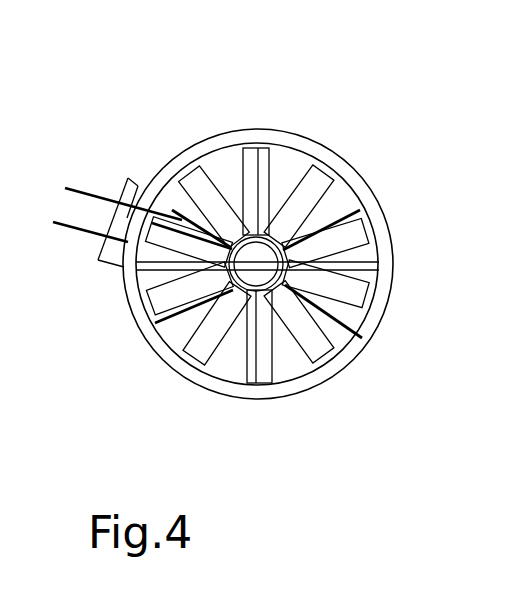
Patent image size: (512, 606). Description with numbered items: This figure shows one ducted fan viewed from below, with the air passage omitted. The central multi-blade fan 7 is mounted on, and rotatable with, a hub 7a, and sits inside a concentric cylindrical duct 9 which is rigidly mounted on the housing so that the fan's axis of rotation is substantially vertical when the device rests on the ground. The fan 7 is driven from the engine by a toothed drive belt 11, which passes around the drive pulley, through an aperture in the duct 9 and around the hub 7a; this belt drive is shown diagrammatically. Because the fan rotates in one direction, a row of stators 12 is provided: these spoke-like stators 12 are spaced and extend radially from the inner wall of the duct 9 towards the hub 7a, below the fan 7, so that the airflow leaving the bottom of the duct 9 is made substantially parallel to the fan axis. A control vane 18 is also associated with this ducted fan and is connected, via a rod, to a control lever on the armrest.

The multi-blade fan 7 is at (246, 150).
The hub 7a is at (272, 241).
The duct 9 is at (163, 169).
The drive belt 11 is at (72, 240).
The stators 12 is at (276, 374).
The control vane 18 is at (380, 268).